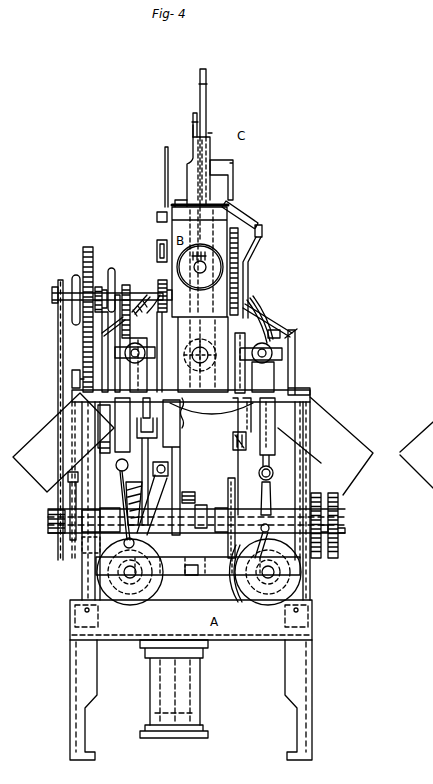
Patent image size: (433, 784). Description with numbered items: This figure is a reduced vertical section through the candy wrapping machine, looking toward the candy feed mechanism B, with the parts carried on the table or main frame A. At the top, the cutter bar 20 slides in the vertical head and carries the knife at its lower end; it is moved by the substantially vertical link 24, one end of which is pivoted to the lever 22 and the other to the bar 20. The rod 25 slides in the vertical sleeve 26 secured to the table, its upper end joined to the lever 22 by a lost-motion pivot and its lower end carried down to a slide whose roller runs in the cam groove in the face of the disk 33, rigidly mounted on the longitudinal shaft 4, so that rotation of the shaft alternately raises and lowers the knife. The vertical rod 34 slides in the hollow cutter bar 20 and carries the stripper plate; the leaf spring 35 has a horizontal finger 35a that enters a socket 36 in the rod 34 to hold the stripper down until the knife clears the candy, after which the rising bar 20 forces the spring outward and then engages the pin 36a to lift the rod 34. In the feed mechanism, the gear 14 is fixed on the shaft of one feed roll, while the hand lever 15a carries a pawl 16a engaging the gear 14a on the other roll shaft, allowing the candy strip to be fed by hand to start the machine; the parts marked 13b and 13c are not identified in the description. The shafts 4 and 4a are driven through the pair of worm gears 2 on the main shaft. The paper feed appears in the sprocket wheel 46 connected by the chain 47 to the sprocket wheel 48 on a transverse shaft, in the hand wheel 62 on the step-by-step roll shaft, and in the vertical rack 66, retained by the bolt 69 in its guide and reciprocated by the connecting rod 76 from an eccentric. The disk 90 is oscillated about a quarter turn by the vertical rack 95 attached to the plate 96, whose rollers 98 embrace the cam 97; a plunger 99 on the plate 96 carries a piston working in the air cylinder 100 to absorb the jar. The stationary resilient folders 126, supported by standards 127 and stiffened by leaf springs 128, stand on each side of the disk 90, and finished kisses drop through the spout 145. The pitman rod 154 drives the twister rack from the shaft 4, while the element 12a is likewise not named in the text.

The vertical rod 34 is at (207, 94).
The socket 36 is at (198, 85).
The horizontal finger 35a is at (193, 120).
The leaf spring 35 is at (193, 133).
The pin 36a is at (212, 133).
The cutter bar 20 is at (212, 151).
The link 24 is at (233, 188).
The hand lever 15a is at (164, 170).
The lever 22 is at (252, 222).
The rod 25 is at (249, 265).
The rack 13b is at (239, 250).
The rack 13c is at (239, 282).
The pawl 16a is at (157, 224).
The gear 14a is at (157, 244).
The gear 14 is at (159, 280).
The chain 47 is at (58, 332).
The sprocket wheel 46 is at (52, 292).
The hand wheel 62 is at (77, 275).
The vertical rack 66 is at (83, 345).
The disk 90 is at (143, 340).
The connecting rod 76 is at (70, 378).
The vertical sleeve 26 is at (257, 344).
The stationary folders 126 is at (270, 322).
The leaf springs 128 is at (281, 328).
The rack 12a is at (300, 332).
The standards 127 is at (297, 356).
The spout 145 is at (28, 447).
The vertical rack 95 is at (184, 426).
The plate 96 is at (181, 460).
The rollers 98 is at (200, 579).
The cam 97 is at (201, 505).
The bolt 69 is at (116, 467).
The pitman rod 154 is at (122, 493).
The worm gears 2 is at (134, 482).
The sprocket wheel 48 is at (48, 535).
The longitudinal shaft 4a is at (131, 578).
The longitudinal shaft 4 is at (256, 560).
The disk 33 is at (225, 592).
The plunger 99 is at (183, 685).
The air cylinder 100 is at (200, 705).